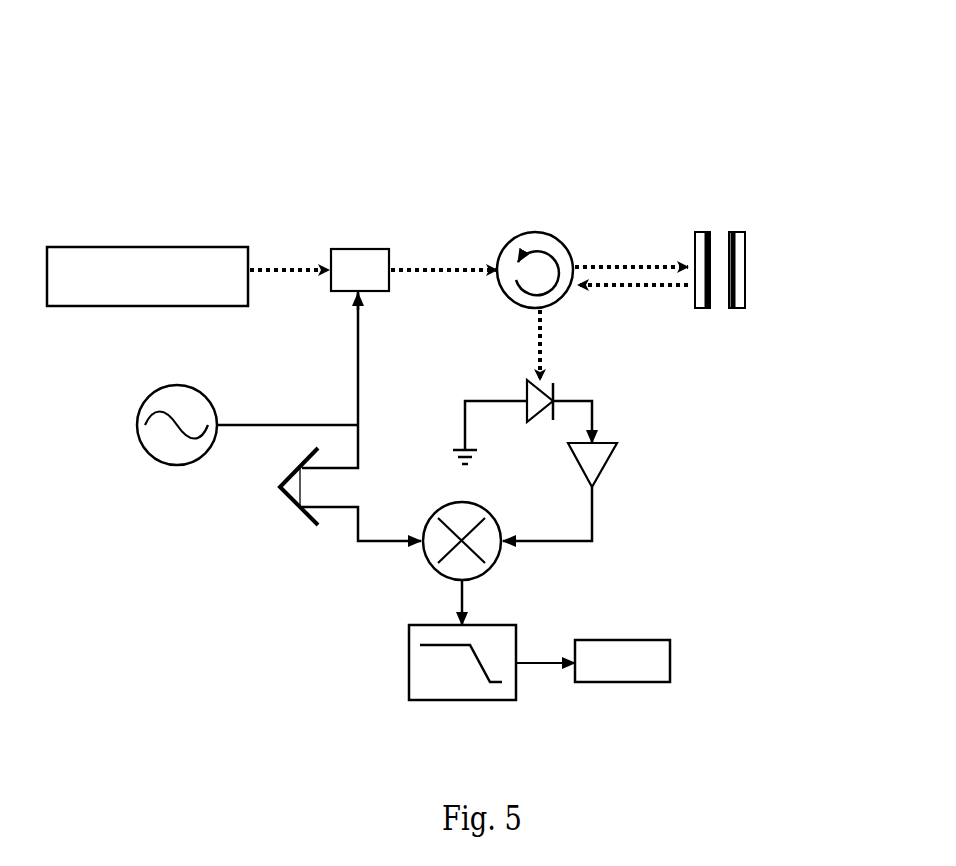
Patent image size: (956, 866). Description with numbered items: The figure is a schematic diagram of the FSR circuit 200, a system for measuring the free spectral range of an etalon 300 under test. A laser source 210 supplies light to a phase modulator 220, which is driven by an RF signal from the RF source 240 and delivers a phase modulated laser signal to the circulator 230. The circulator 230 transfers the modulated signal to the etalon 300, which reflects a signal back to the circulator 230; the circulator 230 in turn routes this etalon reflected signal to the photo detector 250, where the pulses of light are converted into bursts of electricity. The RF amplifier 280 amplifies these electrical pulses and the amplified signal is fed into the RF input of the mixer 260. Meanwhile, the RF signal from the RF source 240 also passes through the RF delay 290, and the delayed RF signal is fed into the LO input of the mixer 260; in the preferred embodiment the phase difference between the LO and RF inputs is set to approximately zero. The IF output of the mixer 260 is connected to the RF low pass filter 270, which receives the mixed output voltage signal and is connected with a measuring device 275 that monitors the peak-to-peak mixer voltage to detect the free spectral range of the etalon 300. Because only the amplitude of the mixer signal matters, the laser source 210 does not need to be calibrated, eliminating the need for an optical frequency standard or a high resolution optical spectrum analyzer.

The FSR circuit 200 is at (187, 90).
The laser source 210 is at (145, 246).
The phase modulator 220 is at (323, 248).
The circulator 230 is at (503, 227).
The RF source 240 is at (147, 400).
The photo detector 250 is at (565, 382).
The mixer 260 is at (442, 578).
The RF low pass filter 270 is at (527, 633).
The measuring device 275 is at (687, 633).
The RF amplifier 280 is at (605, 482).
The RF delay 290 is at (285, 520).
The etalon 300 is at (724, 227).